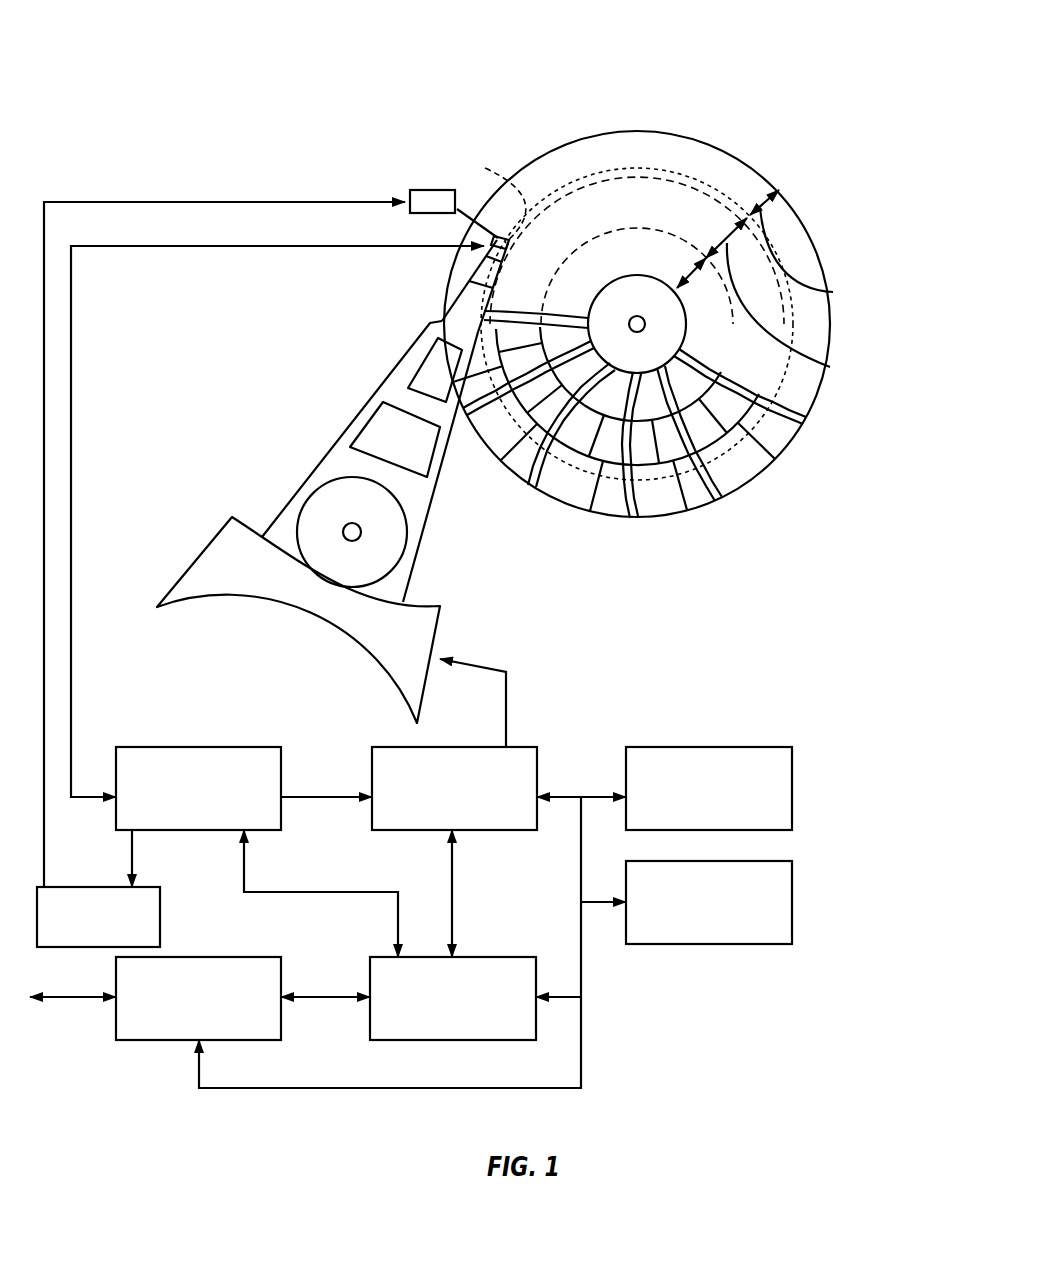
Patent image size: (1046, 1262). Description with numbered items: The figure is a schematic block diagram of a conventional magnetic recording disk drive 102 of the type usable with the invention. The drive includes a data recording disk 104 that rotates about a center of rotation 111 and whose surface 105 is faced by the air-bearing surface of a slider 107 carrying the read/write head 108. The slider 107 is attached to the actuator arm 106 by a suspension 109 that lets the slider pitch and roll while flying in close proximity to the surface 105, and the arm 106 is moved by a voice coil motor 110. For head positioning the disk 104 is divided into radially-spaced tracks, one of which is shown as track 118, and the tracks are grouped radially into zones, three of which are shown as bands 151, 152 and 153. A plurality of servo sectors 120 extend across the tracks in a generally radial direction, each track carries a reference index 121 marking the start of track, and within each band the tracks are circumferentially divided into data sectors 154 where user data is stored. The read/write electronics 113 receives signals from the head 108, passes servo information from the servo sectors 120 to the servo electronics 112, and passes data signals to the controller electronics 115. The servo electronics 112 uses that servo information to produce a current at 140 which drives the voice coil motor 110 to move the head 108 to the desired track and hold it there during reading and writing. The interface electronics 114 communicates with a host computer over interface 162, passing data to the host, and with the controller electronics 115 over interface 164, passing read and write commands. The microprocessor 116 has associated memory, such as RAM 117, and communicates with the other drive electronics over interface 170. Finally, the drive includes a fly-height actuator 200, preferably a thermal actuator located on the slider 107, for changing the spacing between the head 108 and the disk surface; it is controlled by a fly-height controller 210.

The disk drive 102 is at (174, 56).
The data recording disk 104 is at (592, 132).
The disk surface 105 is at (690, 146).
The actuator arm 106 is at (410, 346).
The slider 107 is at (472, 276).
The read/write head 108 is at (508, 244).
The suspension 109 is at (470, 330).
The voice coil motor 110 is at (224, 520).
The center of rotation 111 is at (637, 316).
The servo electronics 112 is at (435, 747).
The read/write electronics 113 is at (175, 747).
The interface electronics 114 is at (205, 957).
The controller electronics 115 is at (468, 957).
The microprocessor 116 is at (782, 747).
The RAM 117 is at (782, 861).
The track 118 is at (480, 200).
The servo sectors 120 is at (534, 490).
The reference index 121 is at (808, 421).
The current 140 is at (506, 680).
The band 151 is at (833, 291).
The band 152 is at (830, 368).
The band 153 is at (687, 278).
The data sectors 154 is at (778, 443).
The interface 162 is at (73, 987).
The interface 164 is at (325, 987).
The interface 170 is at (390, 942).
The fly-height actuator 200 is at (421, 190).
The fly-height controller 210 is at (150, 887).